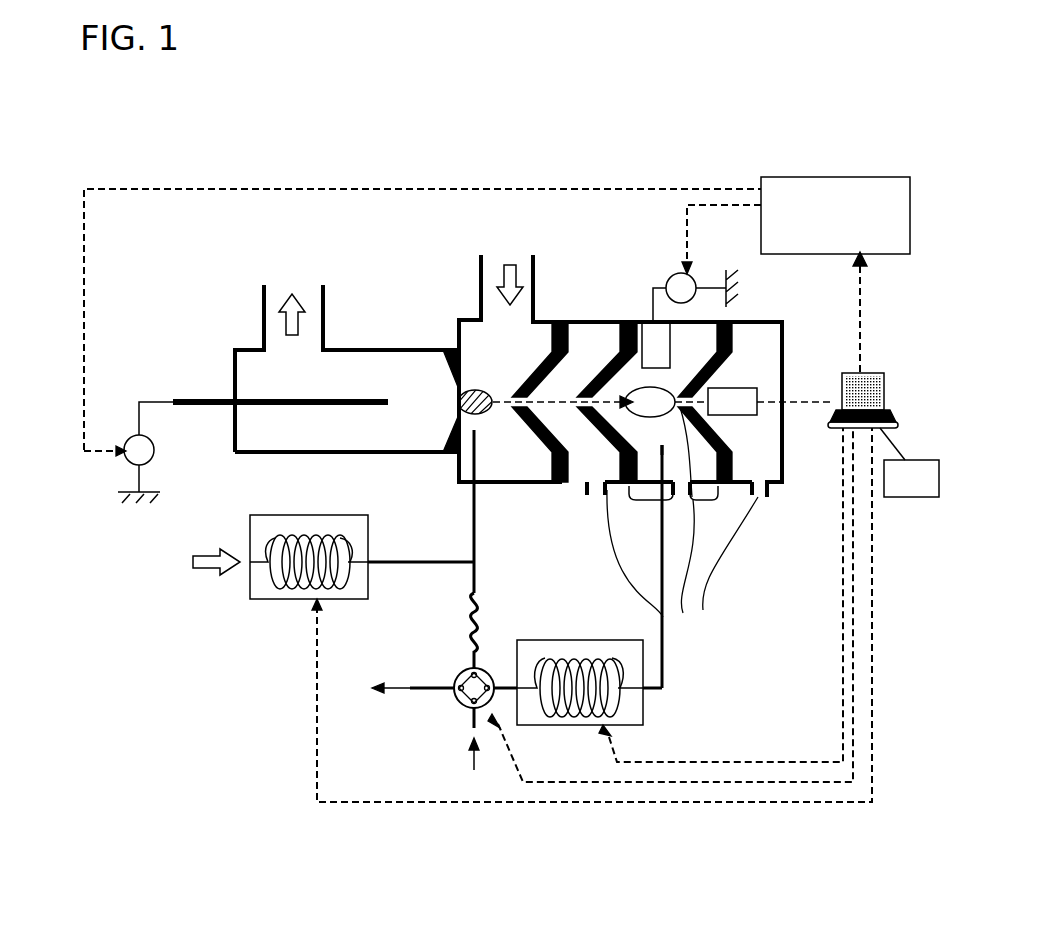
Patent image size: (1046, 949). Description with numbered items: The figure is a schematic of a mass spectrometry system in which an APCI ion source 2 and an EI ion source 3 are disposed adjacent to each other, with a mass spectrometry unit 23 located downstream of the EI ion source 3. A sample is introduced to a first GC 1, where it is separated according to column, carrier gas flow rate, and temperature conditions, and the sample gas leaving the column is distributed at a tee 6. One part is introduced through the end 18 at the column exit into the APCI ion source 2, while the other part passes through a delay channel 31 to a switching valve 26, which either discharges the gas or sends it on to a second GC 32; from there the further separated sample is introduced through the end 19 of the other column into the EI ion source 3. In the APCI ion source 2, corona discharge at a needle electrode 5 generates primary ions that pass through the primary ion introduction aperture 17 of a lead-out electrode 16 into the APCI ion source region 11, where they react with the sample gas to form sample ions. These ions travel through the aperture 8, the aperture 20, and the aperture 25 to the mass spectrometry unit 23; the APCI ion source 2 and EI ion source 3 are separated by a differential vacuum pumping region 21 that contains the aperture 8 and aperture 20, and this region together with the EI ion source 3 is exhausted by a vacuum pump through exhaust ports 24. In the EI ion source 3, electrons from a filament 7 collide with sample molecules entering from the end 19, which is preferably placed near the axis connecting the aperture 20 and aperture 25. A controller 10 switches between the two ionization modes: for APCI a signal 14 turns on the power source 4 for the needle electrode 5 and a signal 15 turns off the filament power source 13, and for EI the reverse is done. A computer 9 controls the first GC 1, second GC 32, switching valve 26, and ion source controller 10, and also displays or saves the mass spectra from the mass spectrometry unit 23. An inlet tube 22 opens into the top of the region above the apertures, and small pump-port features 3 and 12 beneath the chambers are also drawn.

The first GC 1 is at (280, 600).
The APCI ion source 2 is at (553, 268).
The EI ion source 3 is at (678, 500).
The power source for the needle electrode 4 is at (160, 460).
The needle electrode 5 is at (270, 397).
The tee 6 is at (458, 584).
The filament 7 is at (672, 350).
The aperture 8 is at (510, 387).
The computer 9 is at (893, 385).
The controller 10 is at (797, 175).
The APCI ion source 11 is at (460, 388).
The pump port 12 is at (683, 490).
The filament power source 13 is at (697, 275).
The signal 14 is at (168, 183).
The signal 15 is at (683, 218).
The lead-out electrode 16 is at (458, 450).
The primary ion introduction aperture 17 is at (443, 403).
The end at the exit of the GC column 18 is at (475, 428).
The end at the exit of the other GC column 19 is at (660, 440).
The aperture 20 is at (577, 395).
The differential vacuum pumping region 21 is at (572, 462).
The inlet tube 22 is at (497, 262).
The mass spectrometry unit 23 is at (757, 388).
The exhaust ports 24 is at (682, 566).
The aperture 25 is at (680, 403).
The switching valve 26 is at (458, 705).
The delay channel 31 is at (467, 612).
The second GC 32 is at (645, 728).